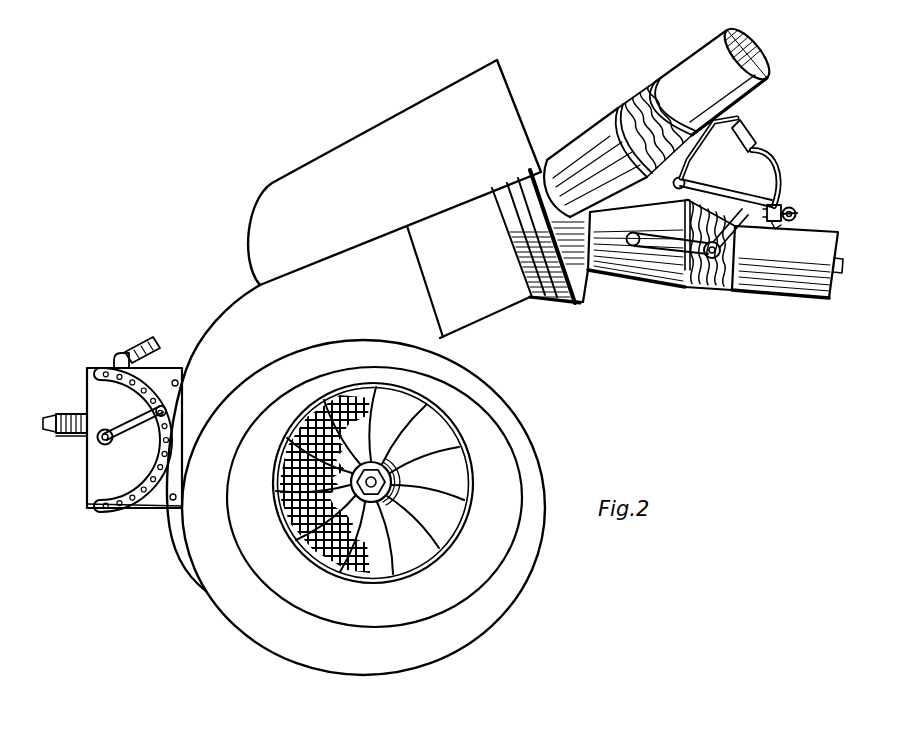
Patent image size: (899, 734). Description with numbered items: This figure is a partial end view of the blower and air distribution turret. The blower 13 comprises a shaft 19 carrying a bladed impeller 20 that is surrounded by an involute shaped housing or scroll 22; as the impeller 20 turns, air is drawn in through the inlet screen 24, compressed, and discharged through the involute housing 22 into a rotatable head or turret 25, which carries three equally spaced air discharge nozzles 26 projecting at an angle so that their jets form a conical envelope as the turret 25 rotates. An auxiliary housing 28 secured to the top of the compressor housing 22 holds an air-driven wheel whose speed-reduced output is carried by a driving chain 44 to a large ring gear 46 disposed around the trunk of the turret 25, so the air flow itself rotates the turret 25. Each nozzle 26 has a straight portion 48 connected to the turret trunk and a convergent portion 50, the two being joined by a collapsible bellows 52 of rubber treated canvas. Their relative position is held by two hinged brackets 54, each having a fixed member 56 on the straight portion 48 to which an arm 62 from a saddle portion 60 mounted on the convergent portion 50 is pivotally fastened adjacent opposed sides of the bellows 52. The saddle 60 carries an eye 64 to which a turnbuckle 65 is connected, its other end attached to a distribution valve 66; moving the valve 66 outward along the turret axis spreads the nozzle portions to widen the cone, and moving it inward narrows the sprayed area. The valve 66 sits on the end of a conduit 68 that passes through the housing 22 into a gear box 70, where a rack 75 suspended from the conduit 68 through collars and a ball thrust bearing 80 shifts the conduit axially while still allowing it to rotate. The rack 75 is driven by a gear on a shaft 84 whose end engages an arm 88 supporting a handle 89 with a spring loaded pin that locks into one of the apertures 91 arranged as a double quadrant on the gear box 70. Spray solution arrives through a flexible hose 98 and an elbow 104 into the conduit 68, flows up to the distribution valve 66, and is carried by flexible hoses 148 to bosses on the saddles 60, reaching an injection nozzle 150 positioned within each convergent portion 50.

The blower 13 is at (545, 455).
The shaft 19 is at (390, 478).
The bladed impeller 20 is at (412, 553).
The involute shaped housing 22 is at (505, 604).
The inlet screen 24 is at (357, 393).
The turret 25 is at (594, 300).
The air discharge nozzles 26 is at (644, 62).
The auxiliary housing 28 is at (394, 172).
The driving chain 44 is at (527, 182).
The ring gear 46 is at (572, 290).
The straight portion 48 is at (573, 157).
The convergent portion 50 is at (700, 52).
The bellows 52 is at (633, 96).
The hinged brackets 54 is at (673, 262).
The fixed member 56 is at (673, 237).
The saddle portion 60 is at (779, 214).
The arm 62 is at (718, 263).
The eye 64 is at (796, 213).
The turnbuckle 65 is at (748, 199).
The distribution valve 66 is at (745, 135).
The conduit 68 is at (150, 388).
The gear box 70 is at (138, 510).
The rack 75 is at (80, 437).
The ball thrust bearing 80 is at (64, 413).
The shaft 84 is at (105, 442).
The arm 88 is at (150, 420).
The handle 89 is at (167, 410).
The apertures 91 is at (105, 505).
The flexible hose 98 is at (156, 336).
The elbow 104 is at (118, 356).
The flexible hose 148 is at (764, 154).
The injection nozzle 150 is at (762, 43).